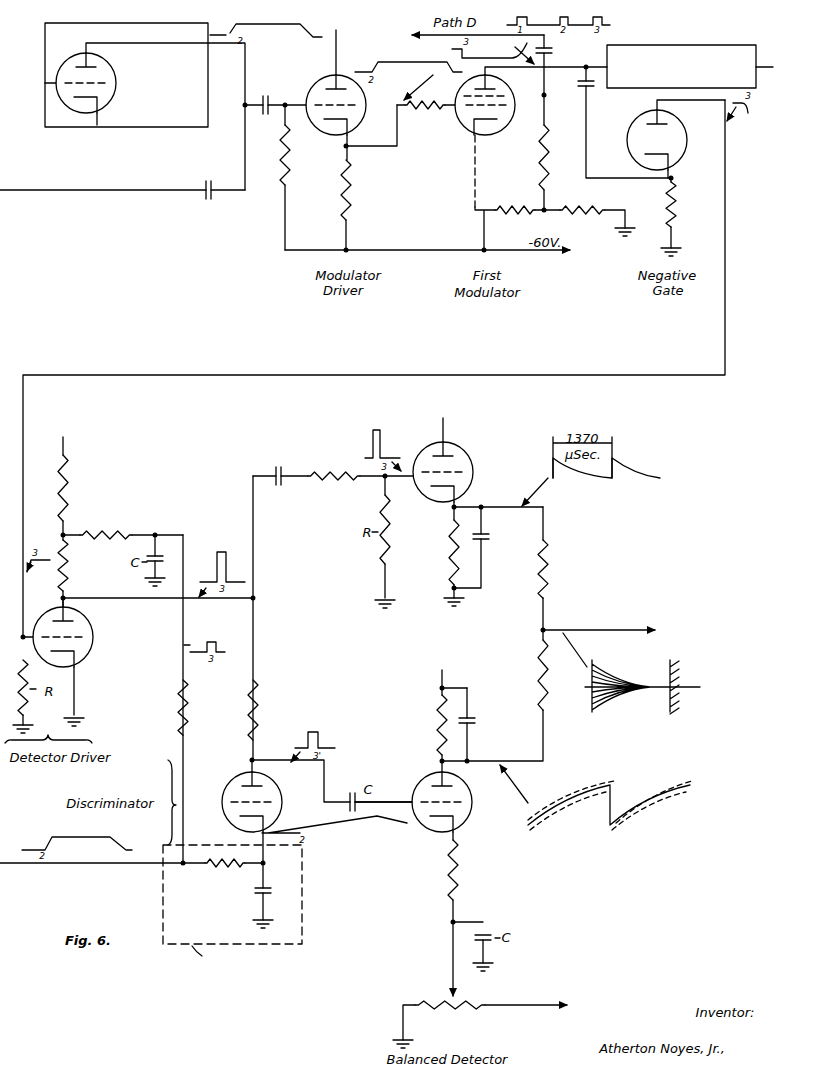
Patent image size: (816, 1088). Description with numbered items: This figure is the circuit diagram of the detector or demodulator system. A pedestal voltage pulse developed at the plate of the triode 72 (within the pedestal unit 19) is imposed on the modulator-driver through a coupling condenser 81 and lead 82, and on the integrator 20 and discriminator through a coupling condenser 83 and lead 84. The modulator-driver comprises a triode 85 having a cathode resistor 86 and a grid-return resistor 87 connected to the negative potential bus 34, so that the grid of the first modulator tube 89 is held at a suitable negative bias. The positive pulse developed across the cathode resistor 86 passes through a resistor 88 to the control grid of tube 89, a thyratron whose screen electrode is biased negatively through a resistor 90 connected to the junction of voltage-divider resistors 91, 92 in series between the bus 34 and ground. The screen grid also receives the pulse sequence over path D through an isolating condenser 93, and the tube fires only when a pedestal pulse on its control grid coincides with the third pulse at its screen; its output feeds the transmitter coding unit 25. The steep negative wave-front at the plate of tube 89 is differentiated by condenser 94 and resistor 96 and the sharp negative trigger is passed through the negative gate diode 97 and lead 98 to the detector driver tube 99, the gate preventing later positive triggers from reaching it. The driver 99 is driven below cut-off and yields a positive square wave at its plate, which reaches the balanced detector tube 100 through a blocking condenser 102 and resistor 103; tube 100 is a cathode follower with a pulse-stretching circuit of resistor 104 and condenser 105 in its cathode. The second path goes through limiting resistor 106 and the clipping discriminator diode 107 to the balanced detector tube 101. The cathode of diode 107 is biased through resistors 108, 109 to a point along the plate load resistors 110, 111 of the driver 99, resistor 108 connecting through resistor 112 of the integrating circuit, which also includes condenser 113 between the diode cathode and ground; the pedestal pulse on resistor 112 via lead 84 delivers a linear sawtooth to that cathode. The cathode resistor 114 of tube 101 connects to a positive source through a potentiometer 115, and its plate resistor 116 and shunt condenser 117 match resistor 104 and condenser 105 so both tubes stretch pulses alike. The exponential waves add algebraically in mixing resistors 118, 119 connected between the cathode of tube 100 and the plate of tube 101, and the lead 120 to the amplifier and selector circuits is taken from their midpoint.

The pedestal generator 19 is at (45, 88).
The triode 72 is at (116, 96).
The coupling condenser 81 is at (266, 98).
The lead 82 is at (285, 102).
The coupling condenser 83 is at (204, 200).
The lead 84 is at (132, 188).
The triode 85 is at (365, 97).
The cathode resistor 86 is at (352, 192).
The grid-return resistor 87 is at (291, 176).
The resistor 88 is at (422, 112).
The first modulator tube 89 is at (508, 88).
The resistor 90 is at (542, 162).
The voltage-divider resistor 91 is at (523, 205).
The voltage-divider resistor 92 is at (584, 208).
The isolating condenser 93 is at (565, 65).
The condenser 94 is at (582, 88).
The resistor 96 is at (677, 204).
The negative gate diode 97 is at (640, 120).
The lead 98 is at (727, 268).
The transmitter coding unit 25 is at (673, 47).
The negative potential bus 34 is at (414, 254).
The detector driver tube 99 is at (93, 633).
The balanced detector tube 100 is at (470, 448).
The balanced detector tube 101 is at (475, 809).
The blocking condenser 102 is at (279, 487).
The resistor 103 is at (330, 484).
The resistor 104 is at (452, 548).
The condenser 105 is at (492, 537).
The limiting resistor 106 is at (258, 706).
The clipping discriminator diode 107 is at (246, 776).
The resistor 108 is at (178, 707).
The resistor 109 is at (120, 530).
The plate load resistor 110 is at (71, 567).
The plate load resistor 111 is at (78, 486).
The resistor 112 is at (219, 871).
The condenser 113 is at (256, 891).
The cathode resistor 114 is at (463, 870).
The potentiometer 115 is at (443, 1000).
The plate resistor 116 is at (439, 724).
The shunt condenser 117 is at (484, 720).
The mixing resistor 118 is at (550, 575).
The mixing resistor 119 is at (541, 680).
The lead 120 is at (613, 636).
The integrator 20 is at (163, 893).